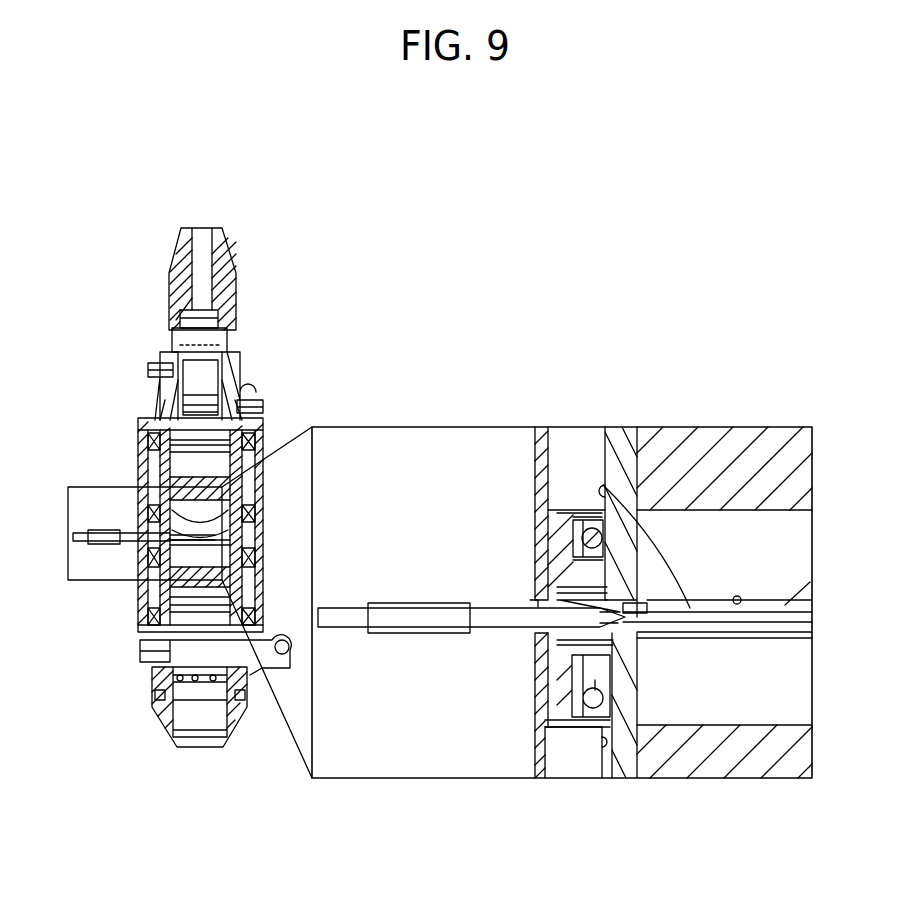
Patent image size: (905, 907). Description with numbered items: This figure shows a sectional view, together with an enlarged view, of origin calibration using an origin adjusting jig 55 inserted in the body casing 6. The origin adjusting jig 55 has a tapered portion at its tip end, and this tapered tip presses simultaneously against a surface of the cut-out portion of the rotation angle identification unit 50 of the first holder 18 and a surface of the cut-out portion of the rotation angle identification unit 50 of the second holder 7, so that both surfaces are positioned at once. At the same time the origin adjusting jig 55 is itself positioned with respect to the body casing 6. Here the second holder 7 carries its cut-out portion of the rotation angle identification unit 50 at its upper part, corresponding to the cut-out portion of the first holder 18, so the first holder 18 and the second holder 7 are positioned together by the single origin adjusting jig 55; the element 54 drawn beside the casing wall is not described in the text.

The body casing 6 is at (138, 463).
The second holder 7 is at (168, 603).
The first holder 18 is at (168, 462).
The rotation angle identification unit 50 is at (627, 607).
The bearing housing 54 is at (543, 610).
The origin adjusting jig 55 is at (102, 538).